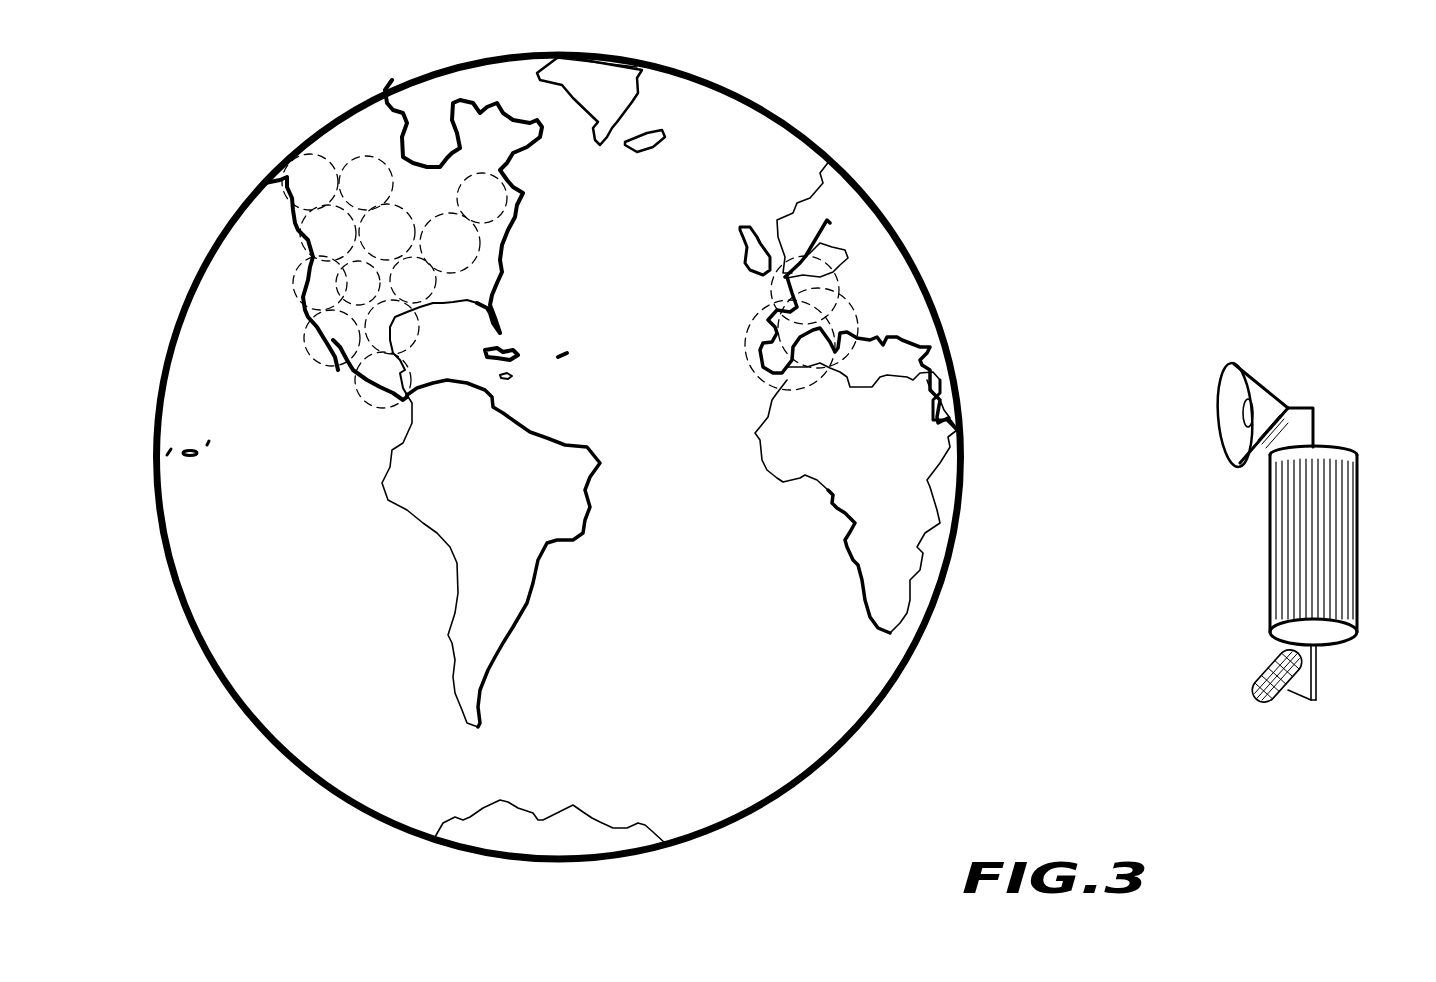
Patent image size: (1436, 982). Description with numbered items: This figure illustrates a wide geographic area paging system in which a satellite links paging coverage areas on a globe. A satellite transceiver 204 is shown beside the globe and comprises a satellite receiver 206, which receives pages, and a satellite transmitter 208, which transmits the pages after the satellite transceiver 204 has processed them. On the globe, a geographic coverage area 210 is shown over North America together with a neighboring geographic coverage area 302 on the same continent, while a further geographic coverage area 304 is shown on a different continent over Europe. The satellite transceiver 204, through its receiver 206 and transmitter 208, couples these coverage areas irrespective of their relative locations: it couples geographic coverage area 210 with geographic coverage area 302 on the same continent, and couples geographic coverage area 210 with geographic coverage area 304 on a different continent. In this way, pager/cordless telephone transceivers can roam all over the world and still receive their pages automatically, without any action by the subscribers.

The geographic coverage area 210 is at (365, 160).
The geographic coverage area 302 is at (510, 222).
The geographic coverage area 304 is at (743, 342).
The satellite transceiver 204 is at (1332, 448).
The satellite receiver 206 is at (1247, 693).
The satellite transmitter 208 is at (1245, 373).